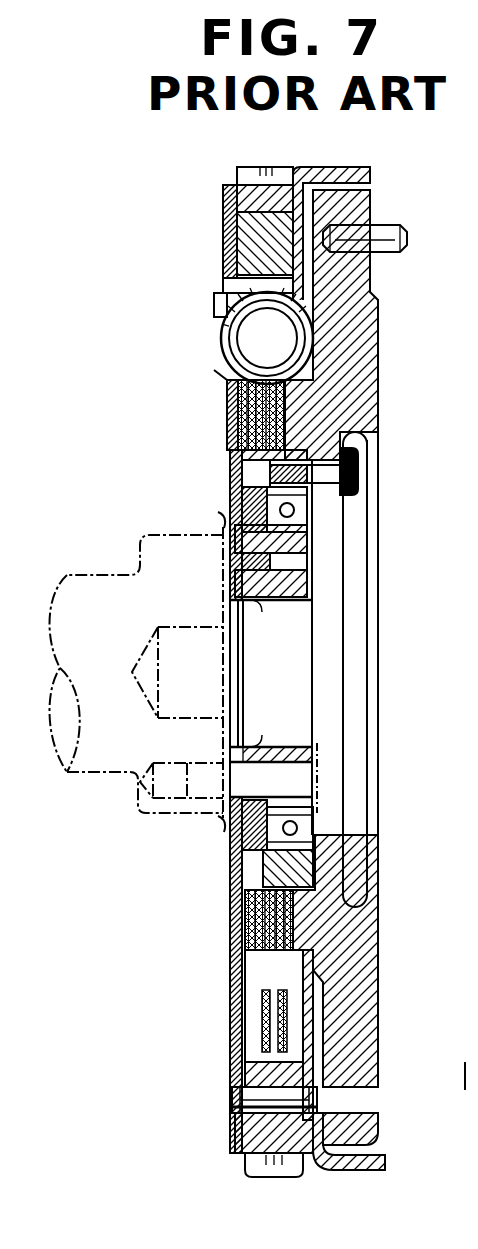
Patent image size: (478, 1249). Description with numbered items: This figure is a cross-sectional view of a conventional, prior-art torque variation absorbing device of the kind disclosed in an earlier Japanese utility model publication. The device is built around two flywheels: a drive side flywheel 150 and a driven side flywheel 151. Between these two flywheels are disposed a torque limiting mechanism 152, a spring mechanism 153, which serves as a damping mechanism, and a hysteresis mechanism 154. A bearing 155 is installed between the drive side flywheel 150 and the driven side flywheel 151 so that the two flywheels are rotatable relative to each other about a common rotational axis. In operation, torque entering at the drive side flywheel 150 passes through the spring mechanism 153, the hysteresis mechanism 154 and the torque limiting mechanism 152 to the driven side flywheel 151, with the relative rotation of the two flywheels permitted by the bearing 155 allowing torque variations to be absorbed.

The drive side flywheel 150 is at (245, 238).
The driven side flywheel 151 is at (350, 283).
The torque limiting mechanism 152 is at (224, 425).
The spring mechanism 153 is at (222, 334).
The hysteresis mechanism 154 is at (226, 501).
The bearing 155 is at (310, 523).